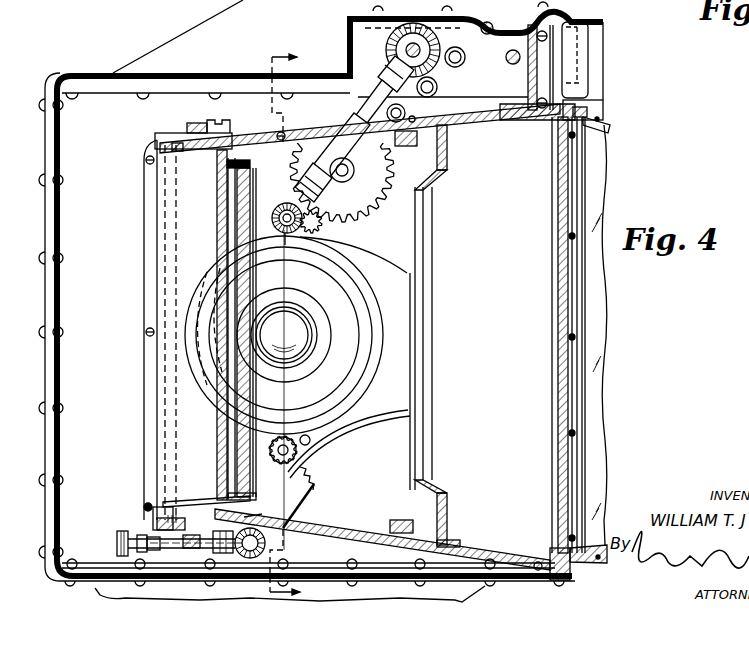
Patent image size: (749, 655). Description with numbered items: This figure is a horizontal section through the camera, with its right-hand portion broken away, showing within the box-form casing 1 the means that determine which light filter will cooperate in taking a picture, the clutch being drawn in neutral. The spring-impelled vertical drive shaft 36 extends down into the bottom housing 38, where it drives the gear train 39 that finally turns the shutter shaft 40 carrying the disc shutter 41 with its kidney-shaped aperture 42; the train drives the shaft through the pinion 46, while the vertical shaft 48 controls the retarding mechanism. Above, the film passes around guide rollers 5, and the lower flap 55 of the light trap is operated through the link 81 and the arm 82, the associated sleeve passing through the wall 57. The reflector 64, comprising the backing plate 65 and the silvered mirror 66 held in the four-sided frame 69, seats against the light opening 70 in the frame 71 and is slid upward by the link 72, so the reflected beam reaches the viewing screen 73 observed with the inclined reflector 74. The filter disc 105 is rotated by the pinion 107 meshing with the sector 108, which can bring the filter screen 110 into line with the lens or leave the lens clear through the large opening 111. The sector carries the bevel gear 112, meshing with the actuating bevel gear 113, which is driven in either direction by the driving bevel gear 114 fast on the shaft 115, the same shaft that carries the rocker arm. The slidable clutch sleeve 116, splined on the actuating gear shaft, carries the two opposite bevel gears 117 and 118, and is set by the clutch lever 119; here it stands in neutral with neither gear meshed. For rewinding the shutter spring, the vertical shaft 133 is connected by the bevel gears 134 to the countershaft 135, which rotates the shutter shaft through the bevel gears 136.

The casing 1 is at (98, 70).
The guide rollers 5 is at (297, 324).
The vertical drive shaft 36 is at (493, 31).
The bottom housing 38 is at (210, 30).
The gear train 39 is at (363, 182).
The shutter shaft 40 is at (287, 203).
The shutter 41 is at (400, 215).
The aperture 42 is at (397, 220).
The pinion 46 is at (313, 229).
The vertical shaft 48 is at (505, 53).
The flap 55 is at (193, 410).
The wall 57 is at (483, 122).
The reflector 64 is at (253, 388).
The backing plate 65 is at (237, 243).
The mirror 66 is at (232, 273).
The frame 69 is at (262, 162).
The light opening 70 is at (420, 388).
The frame 71 is at (447, 170).
The link 72 is at (420, 143).
The viewing screen 73 is at (560, 263).
The inclined reflector 74 is at (593, 325).
The link 81 is at (200, 123).
The arm 82 is at (192, 140).
The disc 105 is at (400, 304).
The pinion 107 is at (308, 456).
The sector 108 is at (318, 500).
The filter screen 110 is at (393, 466).
The large opening 111 is at (358, 392).
The bevel gear 112 is at (287, 557).
The actuating bevel gear 113 is at (243, 517).
The driving bevel gear 114 is at (167, 502).
The shaft 115 is at (160, 270).
The clutch sleeve 116 is at (167, 540).
The bevel gear 117 is at (140, 556).
The bevel gear 118 is at (192, 548).
The clutch lever 119 is at (216, 522).
The vertical shaft 133 is at (407, 50).
The bevel gears 134 is at (437, 70).
The countershaft 135 is at (367, 100).
The bevel gears 136 is at (327, 210).